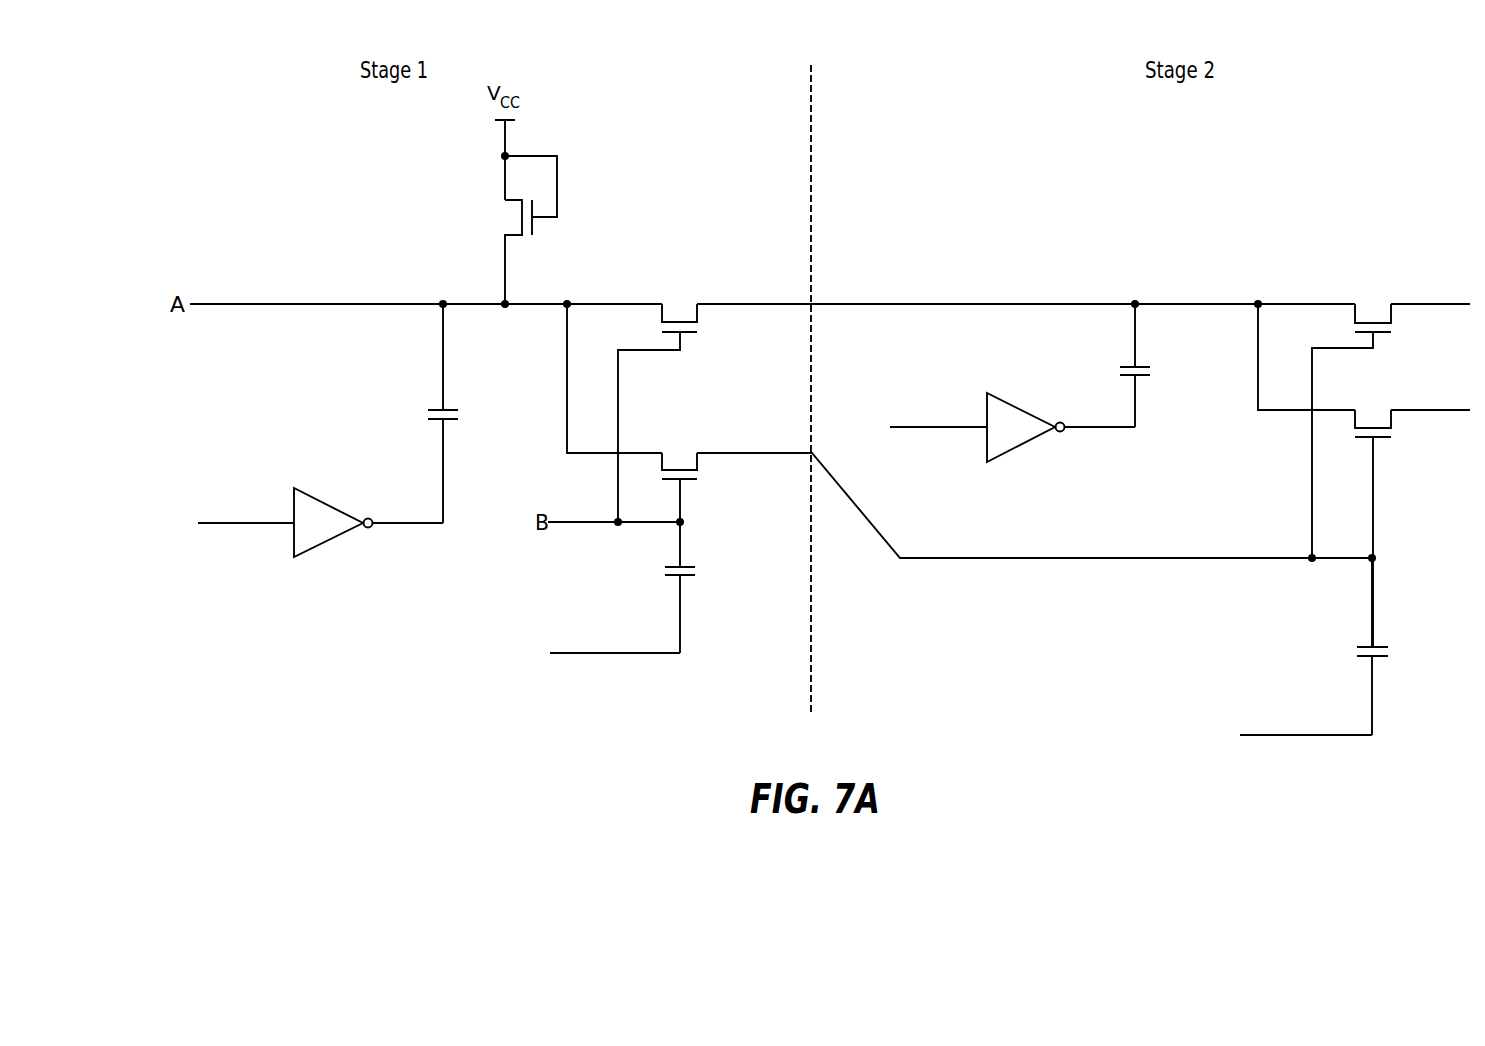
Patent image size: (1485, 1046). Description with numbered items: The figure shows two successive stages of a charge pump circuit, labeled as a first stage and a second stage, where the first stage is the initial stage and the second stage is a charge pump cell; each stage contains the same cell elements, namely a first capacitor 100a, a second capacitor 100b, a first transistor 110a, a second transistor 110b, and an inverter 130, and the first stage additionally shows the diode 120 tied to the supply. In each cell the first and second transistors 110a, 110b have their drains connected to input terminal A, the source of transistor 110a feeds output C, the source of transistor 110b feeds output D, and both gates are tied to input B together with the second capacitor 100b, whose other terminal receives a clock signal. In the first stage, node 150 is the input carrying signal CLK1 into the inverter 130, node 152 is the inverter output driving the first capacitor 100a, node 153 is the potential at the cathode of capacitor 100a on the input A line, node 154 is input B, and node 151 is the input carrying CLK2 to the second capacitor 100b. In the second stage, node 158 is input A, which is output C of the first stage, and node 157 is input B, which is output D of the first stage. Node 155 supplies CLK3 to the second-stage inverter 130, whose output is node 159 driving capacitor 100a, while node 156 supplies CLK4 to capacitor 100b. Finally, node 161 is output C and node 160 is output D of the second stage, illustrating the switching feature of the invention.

The diode 120 is at (510, 215).
The node 153 is at (468, 302).
The first transistor 110a is at (679, 302).
The second transistor 110b is at (679, 450).
The first capacitor 100a is at (462, 413).
The second capacitor 100b is at (700, 571).
The inverter 130 is at (320, 497).
The node 150 is at (241, 528).
The node 152 is at (417, 528).
The node 154 is at (577, 516).
The node 151 is at (602, 658).
The node 158 is at (1011, 300).
The node 155 is at (935, 432).
The node 159 is at (1110, 432).
The node 157 is at (1077, 565).
The node 161 is at (1451, 300).
The node 160 is at (1451, 405).
The node 156 is at (1294, 740).